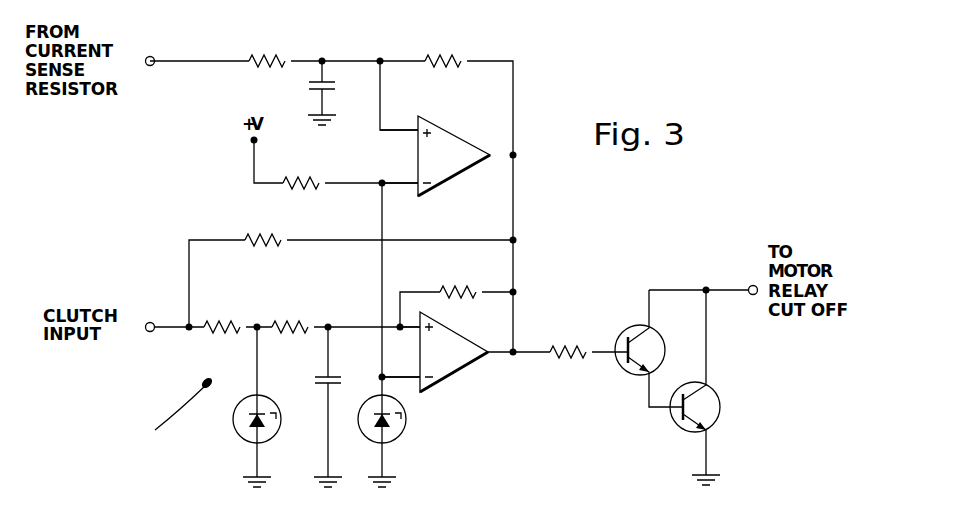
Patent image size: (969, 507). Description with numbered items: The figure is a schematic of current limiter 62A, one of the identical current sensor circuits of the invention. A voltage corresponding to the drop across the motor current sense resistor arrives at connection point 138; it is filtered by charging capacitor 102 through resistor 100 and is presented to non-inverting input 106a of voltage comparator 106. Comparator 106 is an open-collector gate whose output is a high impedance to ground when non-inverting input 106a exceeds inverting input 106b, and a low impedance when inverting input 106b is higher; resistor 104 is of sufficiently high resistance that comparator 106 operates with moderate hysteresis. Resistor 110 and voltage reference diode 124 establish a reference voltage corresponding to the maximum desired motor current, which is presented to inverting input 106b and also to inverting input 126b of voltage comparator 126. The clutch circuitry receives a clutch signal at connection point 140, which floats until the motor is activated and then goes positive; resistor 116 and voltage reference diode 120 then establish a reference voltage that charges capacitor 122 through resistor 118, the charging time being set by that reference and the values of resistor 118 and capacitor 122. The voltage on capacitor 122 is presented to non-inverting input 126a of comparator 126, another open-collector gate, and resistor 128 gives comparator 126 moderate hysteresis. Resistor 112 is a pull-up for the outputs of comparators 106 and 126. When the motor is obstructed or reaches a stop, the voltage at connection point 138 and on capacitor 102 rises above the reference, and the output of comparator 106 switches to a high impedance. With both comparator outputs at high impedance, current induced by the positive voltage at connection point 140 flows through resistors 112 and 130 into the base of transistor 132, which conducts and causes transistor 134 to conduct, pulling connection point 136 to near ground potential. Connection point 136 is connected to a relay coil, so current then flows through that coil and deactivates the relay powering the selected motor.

The current limiter 62A is at (162, 412).
The resistor 100 is at (283, 57).
The capacitor 102 is at (314, 82).
The resistor 104 is at (452, 55).
The voltage comparator 106 is at (445, 128).
The non-inverting input 106a is at (397, 128).
The inverting input 106b is at (402, 186).
The resistor 110 is at (303, 179).
The pull-up resistor 112 is at (273, 237).
The resistor 116 is at (231, 322).
The resistor 118 is at (300, 321).
The voltage reference diode 120 is at (262, 443).
The capacitor 122 is at (322, 376).
The voltage reference diode 124 is at (400, 440).
The voltage comparator 126 is at (462, 366).
The non-inverting input 126a is at (416, 318).
The inverting input 126b is at (412, 387).
The resistor 128 is at (445, 291).
The resistor 130 is at (568, 346).
The transistor 132 is at (631, 384).
The transistor 134 is at (718, 418).
The connection point 136 is at (750, 286).
The connection point 138 is at (152, 56).
The connection point 140 is at (152, 332).